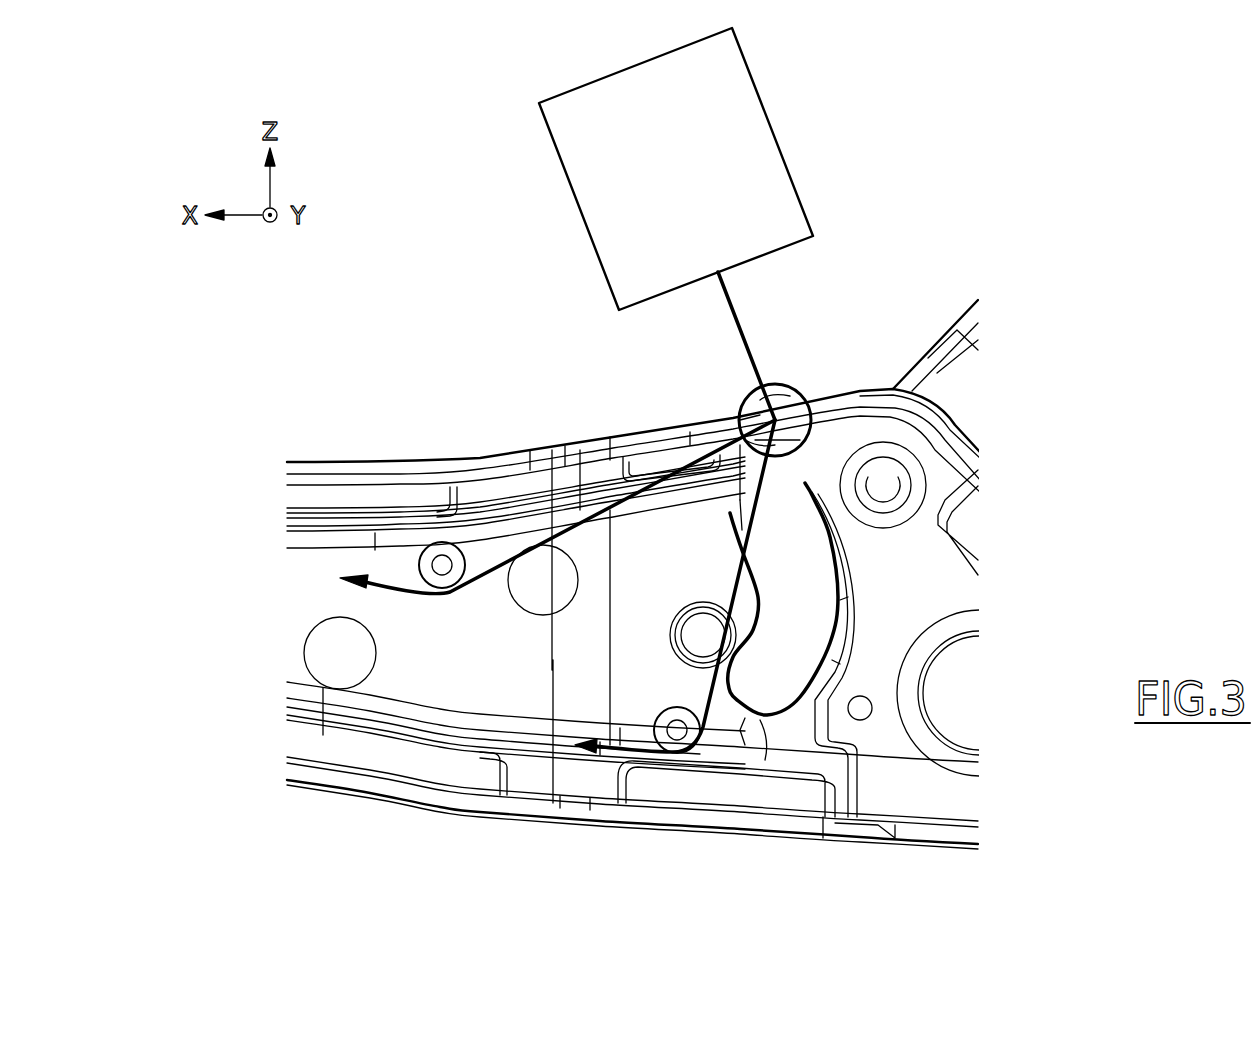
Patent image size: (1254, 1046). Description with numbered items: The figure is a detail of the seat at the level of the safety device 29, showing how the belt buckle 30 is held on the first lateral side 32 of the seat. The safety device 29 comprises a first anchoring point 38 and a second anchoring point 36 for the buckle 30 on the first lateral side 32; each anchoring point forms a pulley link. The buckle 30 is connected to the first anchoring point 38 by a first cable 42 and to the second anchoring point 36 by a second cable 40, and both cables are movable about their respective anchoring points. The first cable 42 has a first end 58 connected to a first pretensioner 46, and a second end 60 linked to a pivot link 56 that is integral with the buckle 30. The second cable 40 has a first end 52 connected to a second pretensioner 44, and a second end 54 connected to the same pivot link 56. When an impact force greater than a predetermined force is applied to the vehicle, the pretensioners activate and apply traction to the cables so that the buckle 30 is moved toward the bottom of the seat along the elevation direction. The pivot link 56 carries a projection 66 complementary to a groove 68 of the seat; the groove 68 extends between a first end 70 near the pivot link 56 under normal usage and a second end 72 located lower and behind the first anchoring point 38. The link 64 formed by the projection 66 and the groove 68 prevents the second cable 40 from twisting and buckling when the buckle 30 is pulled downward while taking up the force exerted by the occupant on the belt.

The safety device 29 is at (780, 70).
The belt buckle 30 is at (752, 125).
The first lateral side 32 is at (925, 585).
The second anchoring point 36 is at (442, 565).
The first anchoring point 38 is at (677, 732).
The second cable 40 is at (580, 512).
The first cable 42 is at (740, 530).
The second pretensioner 44 is at (385, 590).
The first pretensioner 46 is at (600, 742).
The first end of the second cable 52 is at (476, 585).
The second end of the second cable 54 is at (737, 417).
The pivot link 56 is at (778, 386).
The first end of the first cable 58 is at (733, 703).
The second end of the first cable 60 is at (825, 436).
The link 64 is at (843, 565).
The projection 66 is at (803, 397).
The groove 68 is at (820, 607).
The first end of the groove 70 is at (833, 510).
The second end of the groove 72 is at (760, 718).